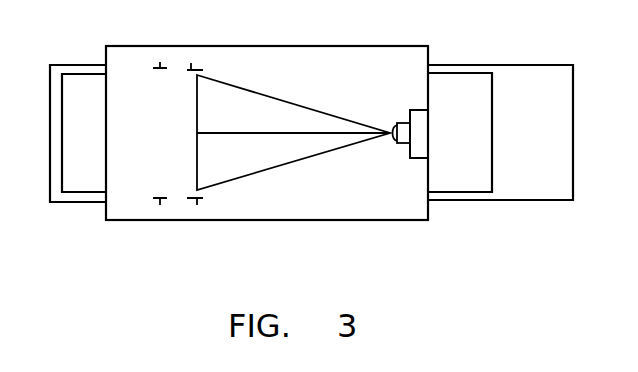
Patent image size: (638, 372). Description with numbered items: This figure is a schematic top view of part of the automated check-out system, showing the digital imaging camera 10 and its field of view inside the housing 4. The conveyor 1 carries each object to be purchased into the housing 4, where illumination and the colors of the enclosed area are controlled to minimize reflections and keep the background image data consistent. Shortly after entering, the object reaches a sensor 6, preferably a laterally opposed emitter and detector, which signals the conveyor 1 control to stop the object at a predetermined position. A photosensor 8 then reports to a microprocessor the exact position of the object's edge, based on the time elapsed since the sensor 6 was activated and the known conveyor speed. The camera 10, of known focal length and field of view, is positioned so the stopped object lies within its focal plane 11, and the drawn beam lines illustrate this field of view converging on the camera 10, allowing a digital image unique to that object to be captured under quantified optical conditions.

The conveyor 1 is at (79, 85).
The housing 4 is at (363, 46).
The sensor 6 is at (160, 62).
The photosensor 8 is at (191, 68).
The digital imaging camera 10 is at (415, 158).
The focal plane 11 is at (197, 108).